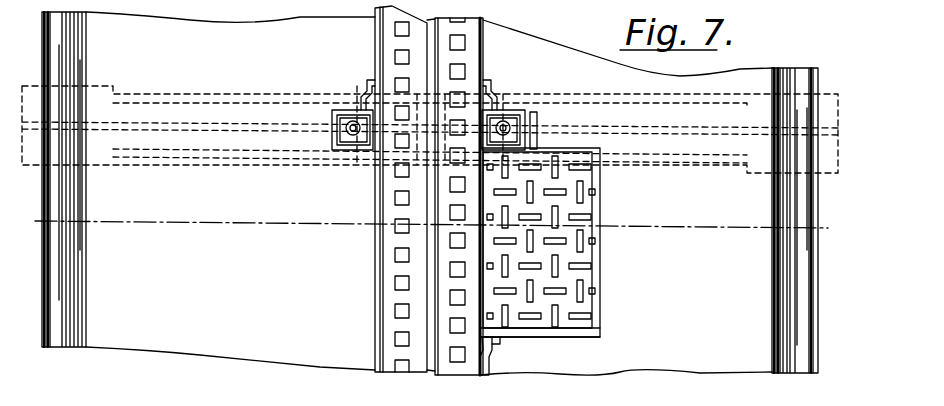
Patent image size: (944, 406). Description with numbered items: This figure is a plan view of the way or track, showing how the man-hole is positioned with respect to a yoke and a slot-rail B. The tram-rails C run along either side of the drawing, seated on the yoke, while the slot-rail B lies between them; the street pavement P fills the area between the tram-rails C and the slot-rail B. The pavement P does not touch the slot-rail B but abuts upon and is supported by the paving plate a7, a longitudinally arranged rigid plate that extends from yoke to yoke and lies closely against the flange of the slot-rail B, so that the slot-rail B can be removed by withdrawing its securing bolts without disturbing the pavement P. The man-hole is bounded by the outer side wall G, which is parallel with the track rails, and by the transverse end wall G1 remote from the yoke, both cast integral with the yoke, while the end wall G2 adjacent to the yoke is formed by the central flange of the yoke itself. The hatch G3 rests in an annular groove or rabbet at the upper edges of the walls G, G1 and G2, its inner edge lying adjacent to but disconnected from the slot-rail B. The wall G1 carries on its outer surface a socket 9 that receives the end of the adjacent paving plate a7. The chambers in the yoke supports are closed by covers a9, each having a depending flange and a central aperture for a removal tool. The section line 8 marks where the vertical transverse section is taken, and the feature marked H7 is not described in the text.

The section line 8— 8 is at (430, 225).
The section line 9— 9 is at (496, 342).
The slot-rail B is at (465, 58).
The tram-rail C is at (78, 270).
The street pavement P is at (429, 193).
The side wall of man-hole G is at (597, 262).
The end wall of man-hole G1 is at (567, 333).
The end wall adjacent to yoke G2 is at (568, 152).
The hatch G3 is at (582, 207).
The bar flange H7 is at (335, 262).
The paving plate a7 is at (488, 373).
The cover a9 is at (527, 113).